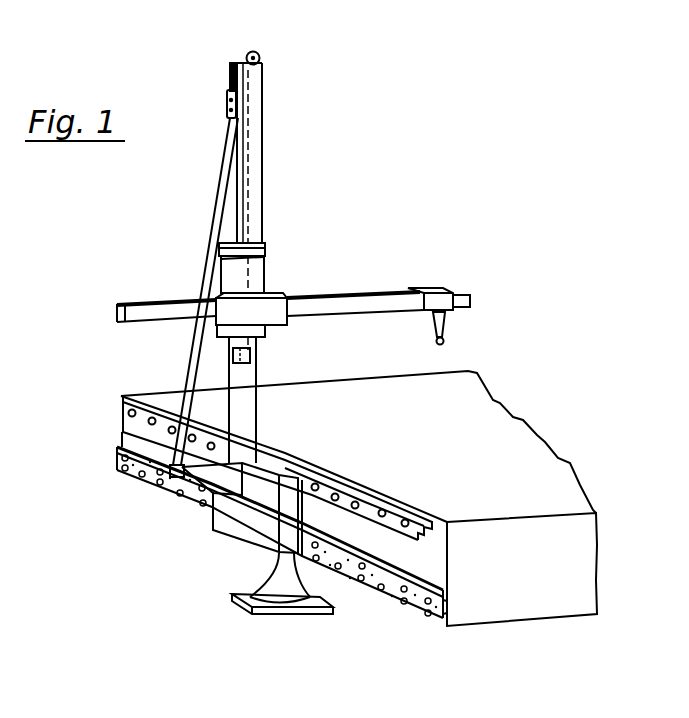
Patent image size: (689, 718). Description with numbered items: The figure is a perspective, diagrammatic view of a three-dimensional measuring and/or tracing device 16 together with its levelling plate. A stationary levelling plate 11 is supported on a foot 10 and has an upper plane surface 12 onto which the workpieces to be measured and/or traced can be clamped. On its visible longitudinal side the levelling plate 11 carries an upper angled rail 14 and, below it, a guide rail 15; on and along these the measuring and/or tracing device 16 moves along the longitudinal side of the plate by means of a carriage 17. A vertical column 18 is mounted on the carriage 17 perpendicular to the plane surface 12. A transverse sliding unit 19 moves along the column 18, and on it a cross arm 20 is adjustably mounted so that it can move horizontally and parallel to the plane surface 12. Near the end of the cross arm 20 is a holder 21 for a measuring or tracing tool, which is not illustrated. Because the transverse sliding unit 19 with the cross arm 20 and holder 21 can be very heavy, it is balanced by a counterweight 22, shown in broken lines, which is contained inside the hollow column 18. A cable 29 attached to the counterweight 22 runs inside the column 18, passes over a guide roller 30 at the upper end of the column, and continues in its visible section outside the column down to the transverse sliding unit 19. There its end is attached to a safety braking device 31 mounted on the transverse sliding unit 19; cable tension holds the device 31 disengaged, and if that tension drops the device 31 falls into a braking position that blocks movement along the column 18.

The foot 10 is at (242, 592).
The levelling plate 11 is at (523, 608).
The upper plane surface 12 is at (453, 414).
The upper angled rail 14 is at (437, 528).
The guide rail 15 is at (412, 614).
The three-dimensional measuring and/or tracing device 16 is at (284, 177).
The carriage 17 is at (228, 521).
The vertical column 18 is at (253, 148).
The transverse sliding unit 19 is at (266, 280).
The cross arm 20 is at (316, 300).
The holder 21 is at (430, 293).
The counterweight 22 is at (252, 354).
The cable 29 is at (233, 86).
The guide roller 30 is at (260, 56).
The safety braking device 31 is at (267, 242).